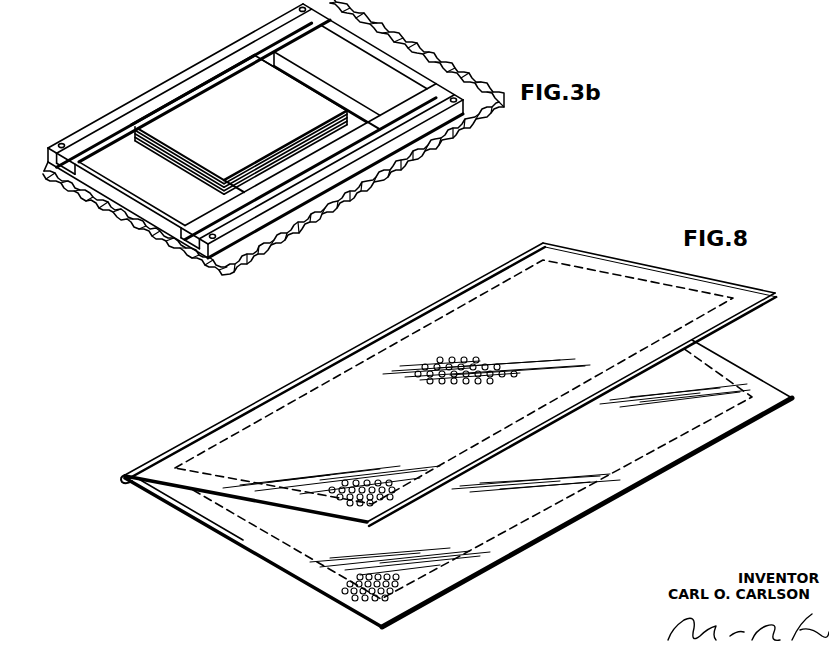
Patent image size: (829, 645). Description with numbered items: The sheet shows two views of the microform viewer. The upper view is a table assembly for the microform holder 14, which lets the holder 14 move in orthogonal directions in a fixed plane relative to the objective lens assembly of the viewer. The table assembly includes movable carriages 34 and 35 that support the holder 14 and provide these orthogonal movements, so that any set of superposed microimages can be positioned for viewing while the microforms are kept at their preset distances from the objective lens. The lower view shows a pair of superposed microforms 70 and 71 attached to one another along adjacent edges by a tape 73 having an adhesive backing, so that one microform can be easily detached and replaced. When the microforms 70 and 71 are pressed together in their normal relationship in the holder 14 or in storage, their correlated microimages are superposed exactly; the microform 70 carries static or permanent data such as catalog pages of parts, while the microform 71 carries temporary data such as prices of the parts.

In FIG. 3b, the microform holder 14 is at (290, 84).
In FIG. 3b, the movable carriage 34 is at (347, 103).
In FIG. 3b, the movable carriage 35 is at (165, 142).
In FIG. 8, the microform 70 is at (722, 290).
In FIG. 8, the microform 71 is at (753, 378).
In FIG. 8, the tape 73 is at (428, 302).